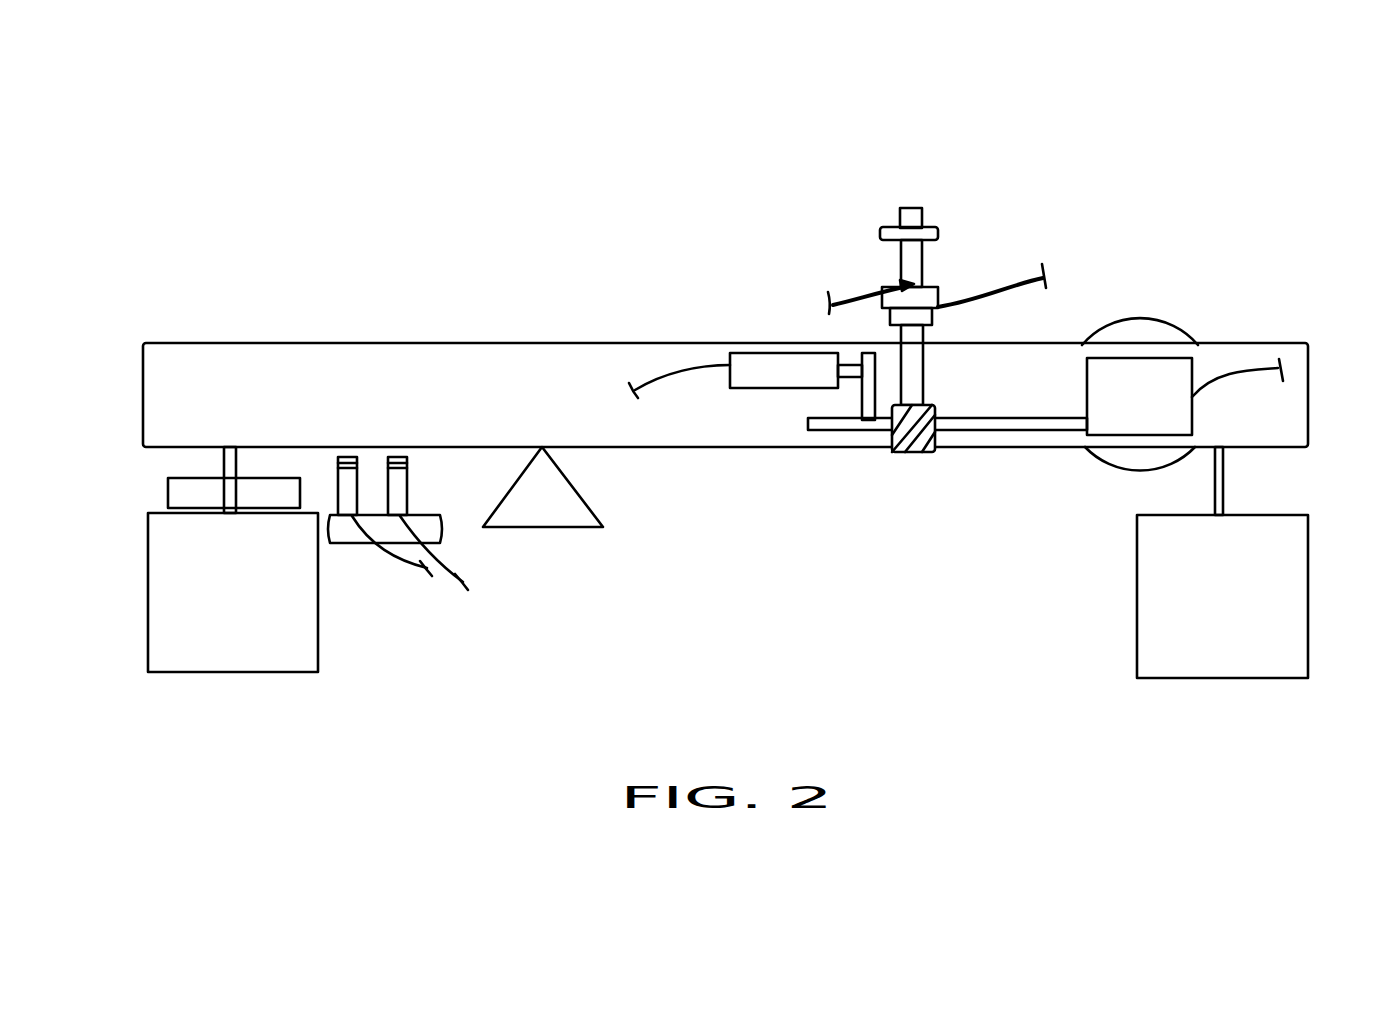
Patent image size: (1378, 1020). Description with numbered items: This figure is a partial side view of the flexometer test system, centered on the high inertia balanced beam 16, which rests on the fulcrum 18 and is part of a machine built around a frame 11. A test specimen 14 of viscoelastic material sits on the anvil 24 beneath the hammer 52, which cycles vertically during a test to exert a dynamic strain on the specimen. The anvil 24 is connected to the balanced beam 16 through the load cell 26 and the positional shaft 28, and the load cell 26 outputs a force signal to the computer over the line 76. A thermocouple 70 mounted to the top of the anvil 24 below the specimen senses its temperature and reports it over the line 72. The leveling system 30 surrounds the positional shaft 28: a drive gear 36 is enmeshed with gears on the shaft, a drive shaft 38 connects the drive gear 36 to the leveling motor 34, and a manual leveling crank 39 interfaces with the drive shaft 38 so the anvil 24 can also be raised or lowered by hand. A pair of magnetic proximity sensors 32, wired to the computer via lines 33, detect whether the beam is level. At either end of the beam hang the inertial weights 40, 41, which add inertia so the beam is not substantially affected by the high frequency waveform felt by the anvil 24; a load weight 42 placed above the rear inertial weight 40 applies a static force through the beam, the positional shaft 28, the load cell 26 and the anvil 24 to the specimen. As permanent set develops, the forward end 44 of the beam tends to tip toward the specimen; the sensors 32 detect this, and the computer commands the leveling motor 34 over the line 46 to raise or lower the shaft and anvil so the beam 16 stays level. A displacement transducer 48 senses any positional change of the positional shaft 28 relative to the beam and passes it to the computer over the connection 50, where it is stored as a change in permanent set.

The frame 11 is at (345, 535).
The test specimen 14 is at (917, 257).
The high inertia balanced beam 16 is at (517, 377).
The fulcrum 18 is at (577, 512).
The anvil 24 is at (927, 294).
The load cell 26 is at (930, 320).
The positional shaft 28 is at (912, 345).
The leveling system 30 is at (1035, 562).
The magnetic proximity sensors 32 is at (445, 502).
The lines 33 is at (403, 585).
The leveling motor 34 is at (1113, 420).
The drive gear 36 is at (906, 453).
The drive shaft 38 is at (1012, 420).
The manual leveling crank 39 is at (1148, 332).
The rear inertial weight 40 is at (253, 650).
The inertial weight 41 is at (1188, 658).
The load weight 42 is at (193, 483).
The forward end 44 is at (1322, 423).
The line 46 is at (1240, 370).
The displacement transducer 48 is at (760, 368).
The connection 50 is at (673, 363).
The hammer 52 is at (935, 233).
The thermocouple 70 is at (893, 274).
The line 72 is at (848, 308).
The line 76 is at (1030, 273).